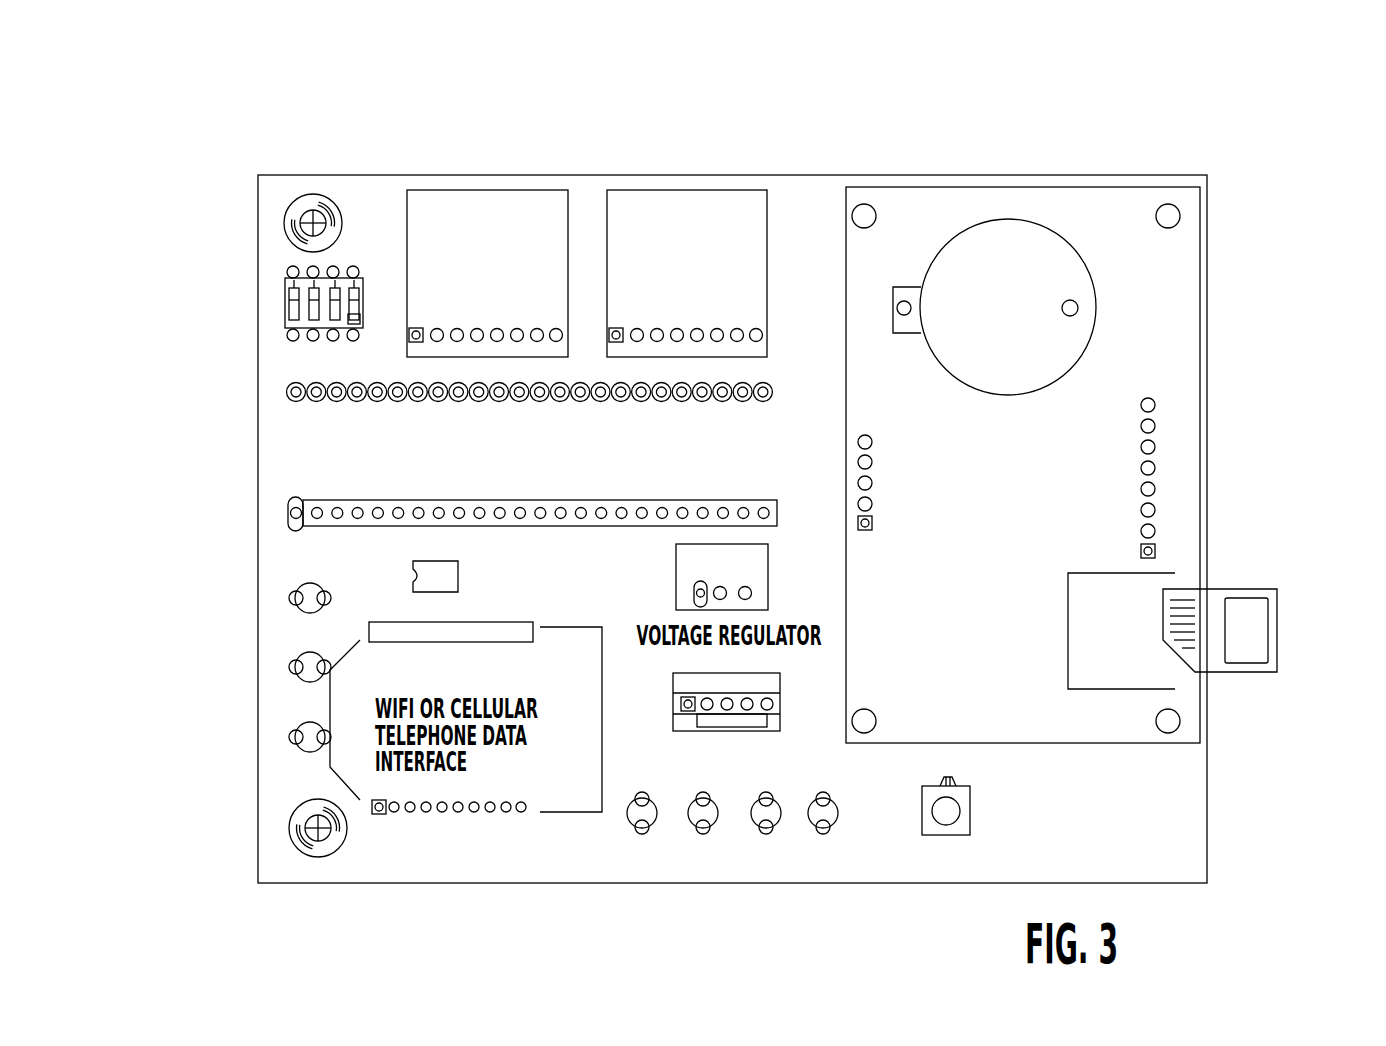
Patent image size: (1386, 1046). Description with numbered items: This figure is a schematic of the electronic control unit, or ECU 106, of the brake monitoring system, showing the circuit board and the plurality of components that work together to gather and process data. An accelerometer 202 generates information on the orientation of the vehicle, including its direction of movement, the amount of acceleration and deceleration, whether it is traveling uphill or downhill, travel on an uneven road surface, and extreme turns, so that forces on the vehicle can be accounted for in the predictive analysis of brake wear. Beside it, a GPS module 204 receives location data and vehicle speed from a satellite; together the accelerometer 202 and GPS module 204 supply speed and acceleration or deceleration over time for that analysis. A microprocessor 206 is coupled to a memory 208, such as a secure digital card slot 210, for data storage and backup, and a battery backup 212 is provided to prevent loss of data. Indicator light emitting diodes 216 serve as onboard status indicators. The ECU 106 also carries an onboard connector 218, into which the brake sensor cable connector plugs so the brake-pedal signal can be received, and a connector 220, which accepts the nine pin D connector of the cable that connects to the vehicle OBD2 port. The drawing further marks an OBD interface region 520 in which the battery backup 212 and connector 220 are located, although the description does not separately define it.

The electronic control unit 106 is at (1243, 112).
The accelerometer 202 is at (487, 193).
The GPS module 204 is at (685, 175).
The microprocessor 206 is at (287, 457).
The memory 208 is at (1145, 672).
The secure digital card slot 210 is at (1277, 633).
The battery backup 212 is at (1093, 283).
The indicator light emitting diodes 216 is at (293, 738).
The onboard connector 218 is at (782, 718).
The connector 220 is at (1163, 466).
The OBD-II interface board 520 is at (1068, 218).